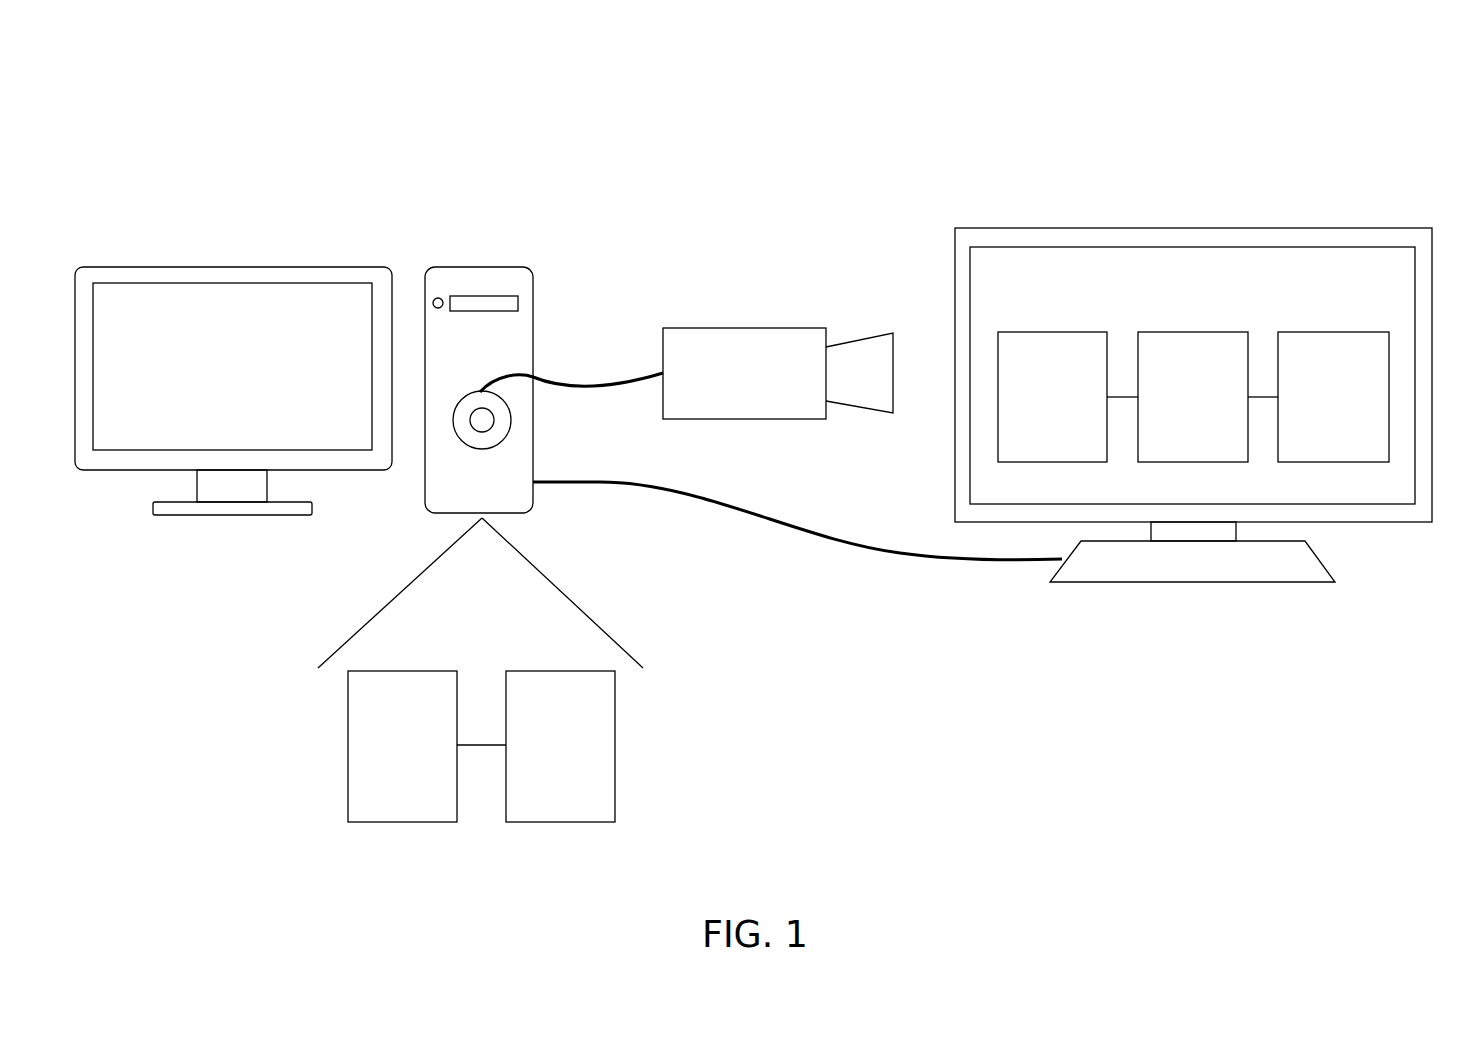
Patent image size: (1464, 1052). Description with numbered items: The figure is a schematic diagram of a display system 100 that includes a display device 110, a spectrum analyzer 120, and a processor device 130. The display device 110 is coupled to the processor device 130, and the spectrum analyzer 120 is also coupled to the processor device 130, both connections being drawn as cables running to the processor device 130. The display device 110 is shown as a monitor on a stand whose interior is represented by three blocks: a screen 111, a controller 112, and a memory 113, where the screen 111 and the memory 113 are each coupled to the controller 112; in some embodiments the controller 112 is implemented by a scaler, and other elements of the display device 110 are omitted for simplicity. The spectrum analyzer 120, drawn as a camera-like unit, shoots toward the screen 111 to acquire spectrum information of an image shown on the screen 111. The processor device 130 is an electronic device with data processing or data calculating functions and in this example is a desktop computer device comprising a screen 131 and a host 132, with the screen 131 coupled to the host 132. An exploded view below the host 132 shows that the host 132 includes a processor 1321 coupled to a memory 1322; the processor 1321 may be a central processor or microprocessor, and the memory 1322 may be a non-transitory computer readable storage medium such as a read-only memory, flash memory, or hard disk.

The display system 100 is at (1446, 70).
The display device 110 is at (1193, 247).
The screen 111 is at (1058, 332).
The controller 112 is at (1191, 332).
The memory 113 is at (1334, 332).
The spectrum analyzer 120 is at (743, 328).
The processor device 130 is at (225, 178).
The screen 131 is at (232, 266).
The host 132 is at (475, 266).
The processor 1321 is at (348, 745).
The memory 1322 is at (615, 745).